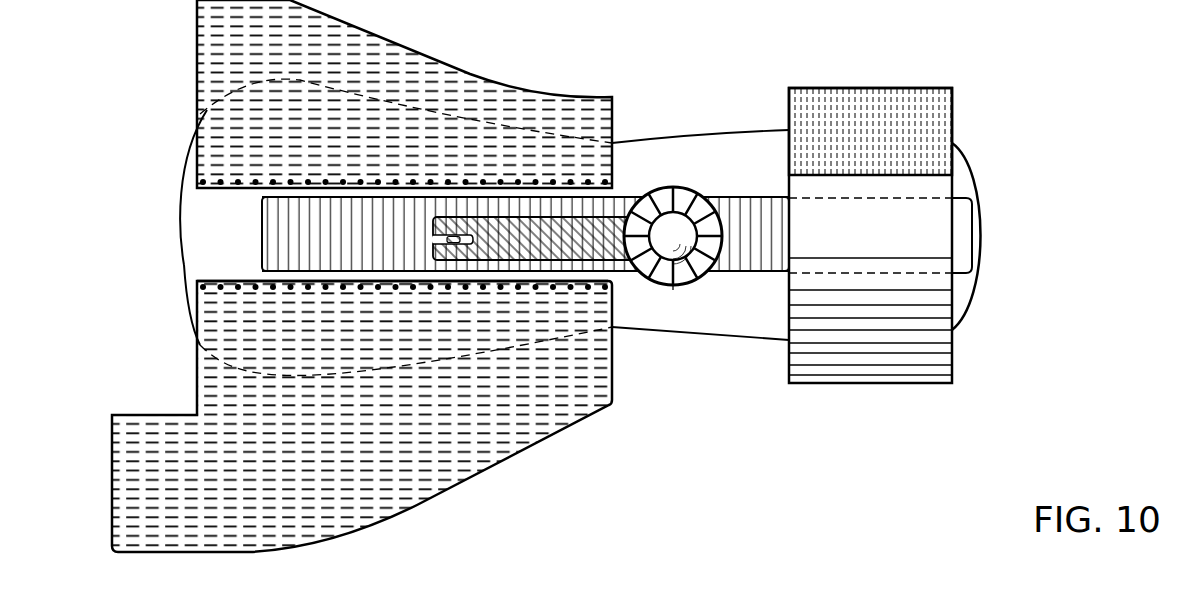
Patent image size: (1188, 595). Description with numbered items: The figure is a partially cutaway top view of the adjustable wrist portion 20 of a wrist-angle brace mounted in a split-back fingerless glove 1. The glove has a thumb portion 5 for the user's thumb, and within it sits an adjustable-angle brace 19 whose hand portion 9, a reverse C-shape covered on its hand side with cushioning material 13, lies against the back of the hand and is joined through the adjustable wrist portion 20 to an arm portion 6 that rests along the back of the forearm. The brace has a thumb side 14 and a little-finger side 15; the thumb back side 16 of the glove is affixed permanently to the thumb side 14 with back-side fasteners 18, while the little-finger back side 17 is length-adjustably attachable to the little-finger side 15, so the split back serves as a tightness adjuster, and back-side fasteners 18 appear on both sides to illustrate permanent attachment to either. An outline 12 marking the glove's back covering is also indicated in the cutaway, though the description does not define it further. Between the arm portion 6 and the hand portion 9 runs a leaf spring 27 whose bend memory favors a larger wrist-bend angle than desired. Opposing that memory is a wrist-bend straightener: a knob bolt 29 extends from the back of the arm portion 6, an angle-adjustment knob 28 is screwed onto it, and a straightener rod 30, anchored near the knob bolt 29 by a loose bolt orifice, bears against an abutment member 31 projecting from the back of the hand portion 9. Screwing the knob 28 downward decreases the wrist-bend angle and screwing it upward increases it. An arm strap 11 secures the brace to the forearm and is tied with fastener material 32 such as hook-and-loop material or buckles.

The fingerless glove 1 is at (609, 460).
The thumb portion 5 is at (160, 493).
The arm portion 6 is at (962, 185).
The hand portion 9 is at (232, 247).
The arm strap 11 is at (880, 247).
The cover 12 is at (310, 117).
The cushioning material 13 is at (746, 5).
The thumb side 14 is at (184, 292).
The little-finger side 15 is at (188, 158).
The thumb back side 16 is at (247, 279).
The little-finger back side 17 is at (228, 192).
The back-side fasteners 18 is at (200, 182).
The adjustable-angle brace 19 is at (1040, 228).
The adjustable wrist portion 20 is at (685, 173).
The leaf spring 27 is at (308, 252).
The angle-adjustment knob 28 is at (673, 285).
The knob bolt 29 is at (683, 5).
The straightener rod 30 is at (530, 235).
The abutment member 31 is at (455, 238).
The fastener material 32 is at (895, 127).